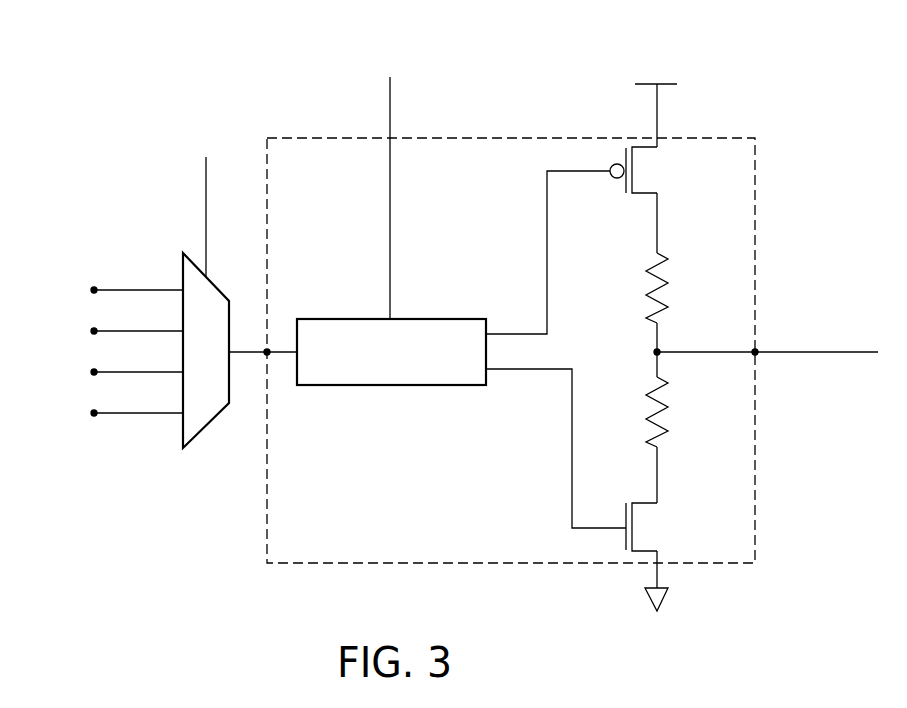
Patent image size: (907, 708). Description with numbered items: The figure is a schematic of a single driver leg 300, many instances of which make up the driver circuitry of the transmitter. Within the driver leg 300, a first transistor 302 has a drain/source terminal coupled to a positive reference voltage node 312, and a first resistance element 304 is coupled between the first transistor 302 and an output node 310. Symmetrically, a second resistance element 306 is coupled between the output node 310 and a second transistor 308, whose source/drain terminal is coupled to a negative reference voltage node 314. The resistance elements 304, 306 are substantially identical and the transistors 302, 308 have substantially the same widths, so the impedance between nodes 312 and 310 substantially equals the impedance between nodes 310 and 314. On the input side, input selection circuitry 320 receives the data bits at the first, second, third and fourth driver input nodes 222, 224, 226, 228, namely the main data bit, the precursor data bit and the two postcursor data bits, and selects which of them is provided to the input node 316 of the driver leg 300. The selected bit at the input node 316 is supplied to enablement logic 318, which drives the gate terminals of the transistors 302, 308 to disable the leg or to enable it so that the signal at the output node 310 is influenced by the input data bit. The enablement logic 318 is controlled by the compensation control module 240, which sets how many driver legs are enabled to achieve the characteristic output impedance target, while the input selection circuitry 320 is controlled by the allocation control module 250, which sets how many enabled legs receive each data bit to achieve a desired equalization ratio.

The driver leg 300 is at (757, 228).
The first transistor 302 is at (691, 178).
The first resistance element 304 is at (669, 274).
The second resistance element 306 is at (669, 397).
The second transistor 308 is at (699, 553).
The output node 310 is at (756, 350).
The positive reference voltage node 312 is at (660, 82).
The negative reference voltage node 314 is at (648, 594).
The input node 316 is at (268, 348).
The enablement logic 318 is at (390, 387).
The input selection circuitry 320 is at (202, 430).
The first driver input node 222 is at (91, 330).
The second driver input node 224 is at (91, 289).
The third driver input node 226 is at (91, 371).
The fourth driver input node 228 is at (91, 412).
The compensation control module 240 is at (389, 170).
The allocation control module 250 is at (204, 188).